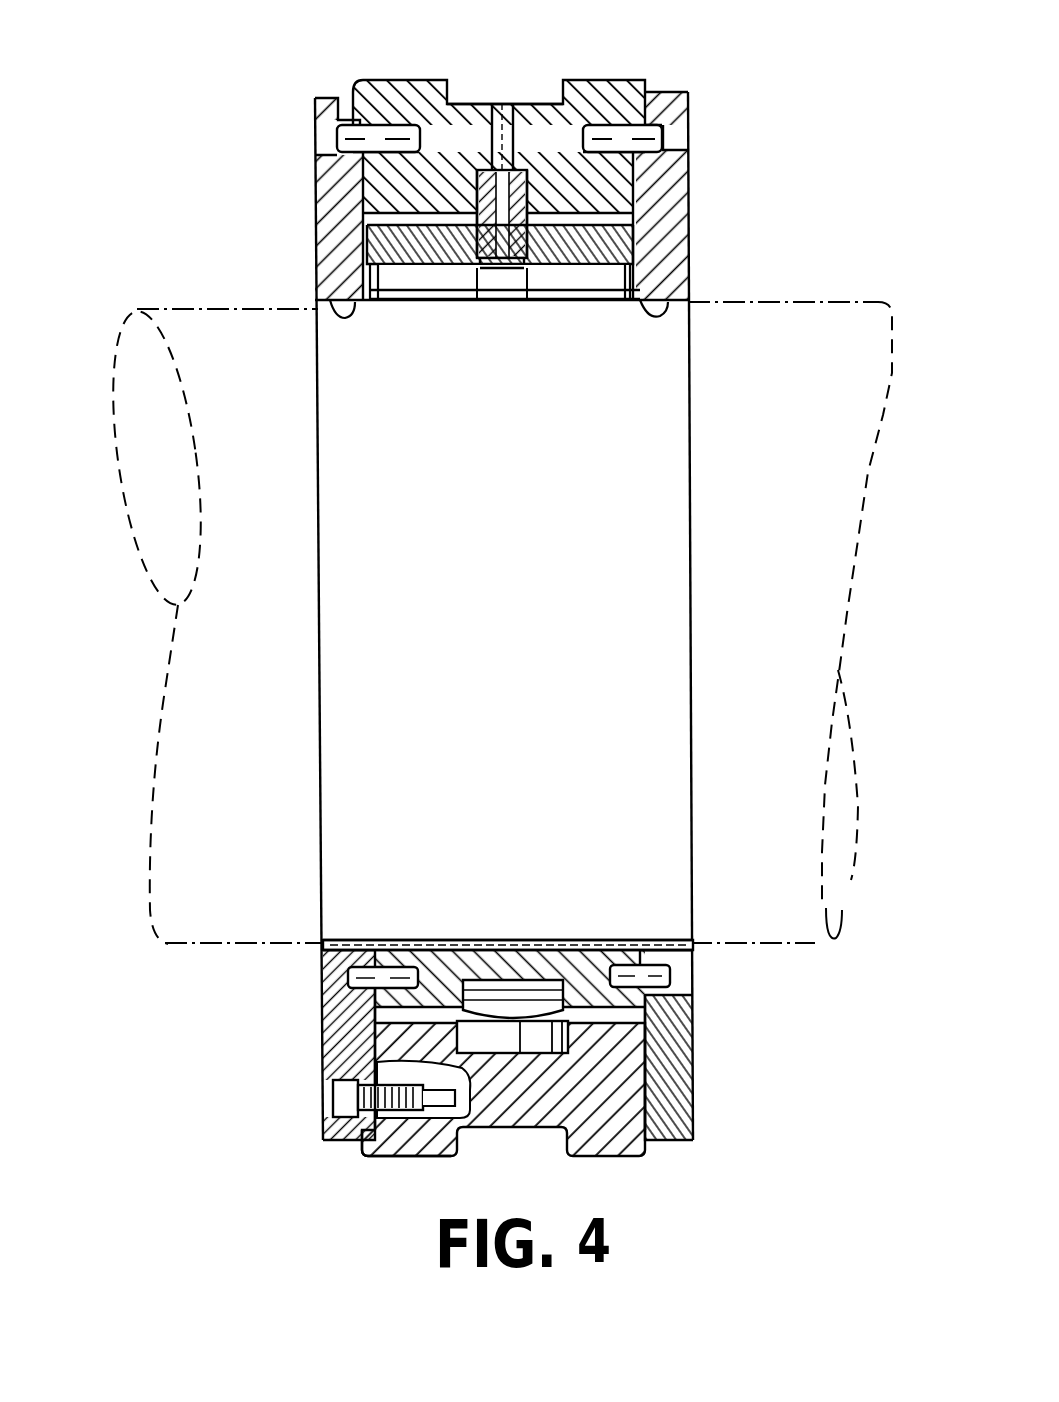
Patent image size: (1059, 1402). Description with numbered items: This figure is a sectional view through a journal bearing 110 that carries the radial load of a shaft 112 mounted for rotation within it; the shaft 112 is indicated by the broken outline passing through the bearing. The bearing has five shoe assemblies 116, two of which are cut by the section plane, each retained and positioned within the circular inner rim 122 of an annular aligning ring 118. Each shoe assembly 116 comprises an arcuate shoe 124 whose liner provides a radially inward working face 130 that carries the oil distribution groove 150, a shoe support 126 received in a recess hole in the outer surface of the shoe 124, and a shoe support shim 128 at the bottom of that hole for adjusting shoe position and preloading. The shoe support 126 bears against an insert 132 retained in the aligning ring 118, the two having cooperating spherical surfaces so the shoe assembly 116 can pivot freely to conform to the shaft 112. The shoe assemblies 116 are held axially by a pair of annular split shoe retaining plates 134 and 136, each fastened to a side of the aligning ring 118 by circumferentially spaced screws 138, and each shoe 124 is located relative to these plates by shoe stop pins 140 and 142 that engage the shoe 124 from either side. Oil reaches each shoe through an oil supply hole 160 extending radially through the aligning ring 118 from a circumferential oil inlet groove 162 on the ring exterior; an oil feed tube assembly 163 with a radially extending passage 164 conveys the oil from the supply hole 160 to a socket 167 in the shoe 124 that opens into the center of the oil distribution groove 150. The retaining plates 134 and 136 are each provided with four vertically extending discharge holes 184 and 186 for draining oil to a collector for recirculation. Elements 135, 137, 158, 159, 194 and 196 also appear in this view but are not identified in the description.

The journal bearing 110 is at (289, 112).
The shaft 112 is at (268, 303).
The shoe assemblies 116 is at (415, 312).
The annular aligning ring 118 is at (578, 79).
The circular inner rim 122 is at (388, 212).
The arcuate shoe 124 is at (446, 300).
The shoe support 126 is at (490, 920).
The shoe support shim 128 is at (540, 944).
The working face 130 is at (492, 300).
The insert 132 is at (515, 1053).
The shoe retaining plate 134 is at (668, 92).
The pin 135 is at (666, 138).
The shoe retaining plate 136 is at (336, 98).
The pin 137 is at (338, 138).
The screws 138 is at (335, 1100).
The shoe stop pin 140 is at (690, 975).
The shoe stop pin 142 is at (346, 978).
The oil distribution groove 150 is at (522, 298).
The left wall 158 is at (372, 302).
The right wall 159 is at (627, 302).
The oil supply hole 160 is at (513, 106).
The oil inlet groove 162 is at (460, 81).
The oil feed tube assembly 163 is at (531, 290).
The radially extending passage 164 is at (497, 112).
The socket 167 is at (495, 305).
The discharge holes 184 is at (678, 1040).
The discharge holes 186 is at (345, 1036).
The notch 194 is at (690, 310).
The notch 196 is at (330, 318).